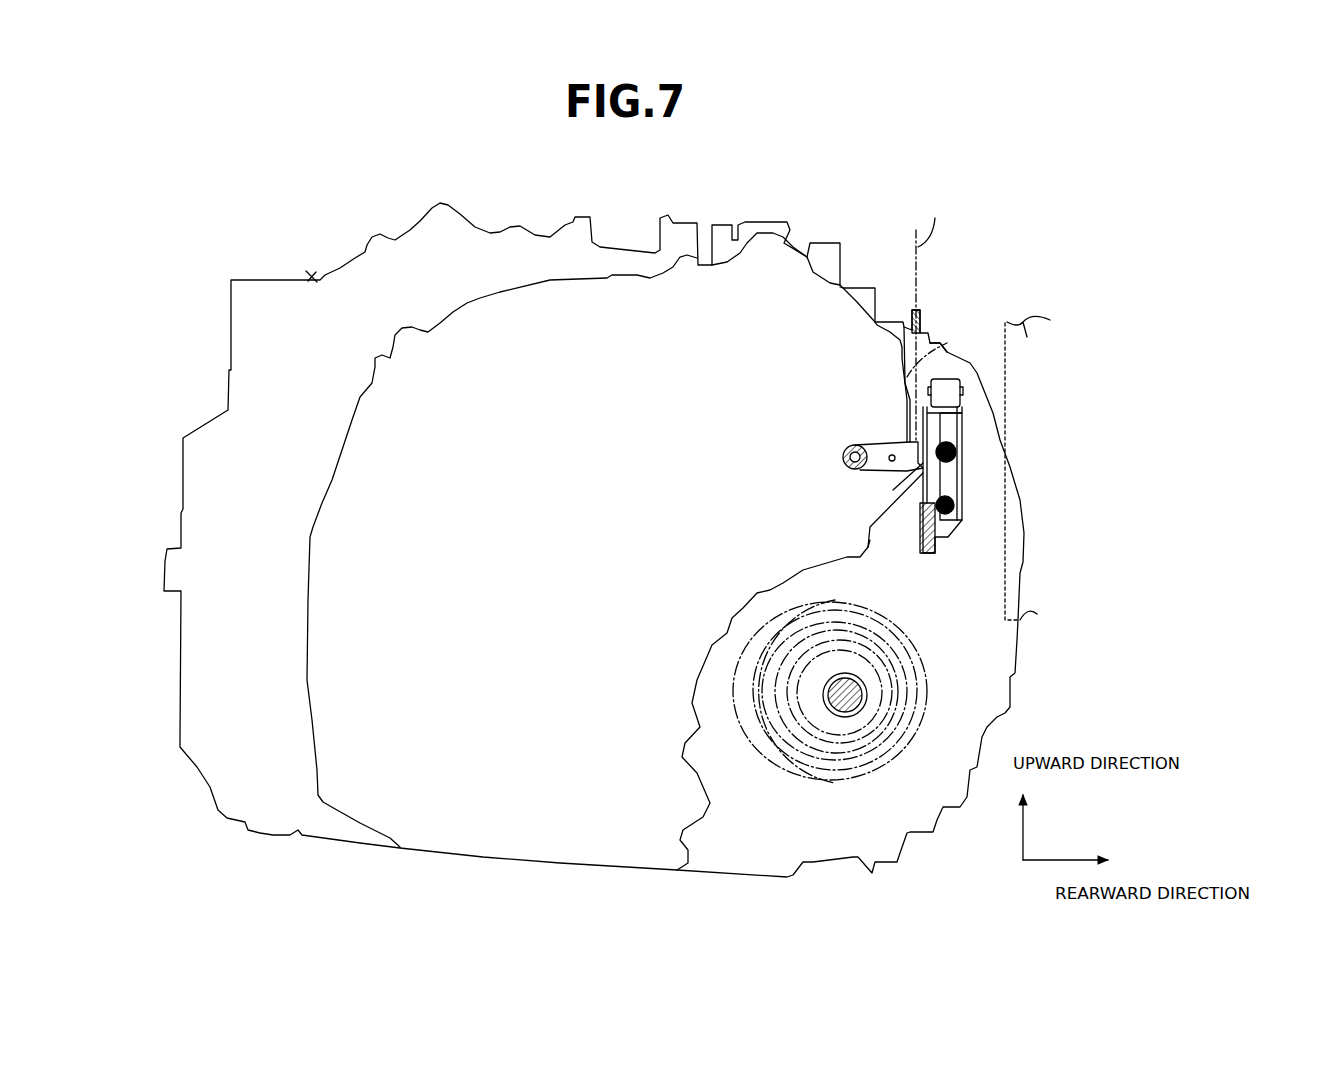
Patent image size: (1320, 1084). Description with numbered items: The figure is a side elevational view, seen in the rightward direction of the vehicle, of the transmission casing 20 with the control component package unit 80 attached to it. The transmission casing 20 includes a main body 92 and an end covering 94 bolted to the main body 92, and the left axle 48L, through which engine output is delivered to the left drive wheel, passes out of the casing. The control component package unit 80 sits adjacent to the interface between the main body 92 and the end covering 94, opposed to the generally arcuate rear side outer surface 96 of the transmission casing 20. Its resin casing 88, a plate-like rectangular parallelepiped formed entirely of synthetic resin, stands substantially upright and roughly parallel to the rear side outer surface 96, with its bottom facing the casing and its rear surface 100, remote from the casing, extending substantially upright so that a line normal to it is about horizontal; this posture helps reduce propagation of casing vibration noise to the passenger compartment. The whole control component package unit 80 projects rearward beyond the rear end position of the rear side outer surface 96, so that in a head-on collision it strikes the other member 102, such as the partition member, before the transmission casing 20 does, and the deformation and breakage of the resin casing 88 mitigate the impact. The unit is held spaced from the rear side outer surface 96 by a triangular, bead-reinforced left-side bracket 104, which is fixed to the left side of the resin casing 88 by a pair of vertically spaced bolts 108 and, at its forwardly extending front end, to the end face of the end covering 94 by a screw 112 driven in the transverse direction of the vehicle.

The transmission casing 20 is at (293, 204).
The left axle 48L is at (850, 700).
The control component package unit 80 is at (969, 525).
The resin casing 88 is at (953, 432).
The main body 92 is at (815, 845).
The end covering 94 is at (485, 837).
The rear side outer surface 96 is at (942, 345).
The rear surface 100 is at (962, 475).
The other member 102 is at (1023, 317).
The left-side bracket 104 is at (887, 472).
The bolts 108 is at (960, 447).
The screw 112 is at (843, 452).